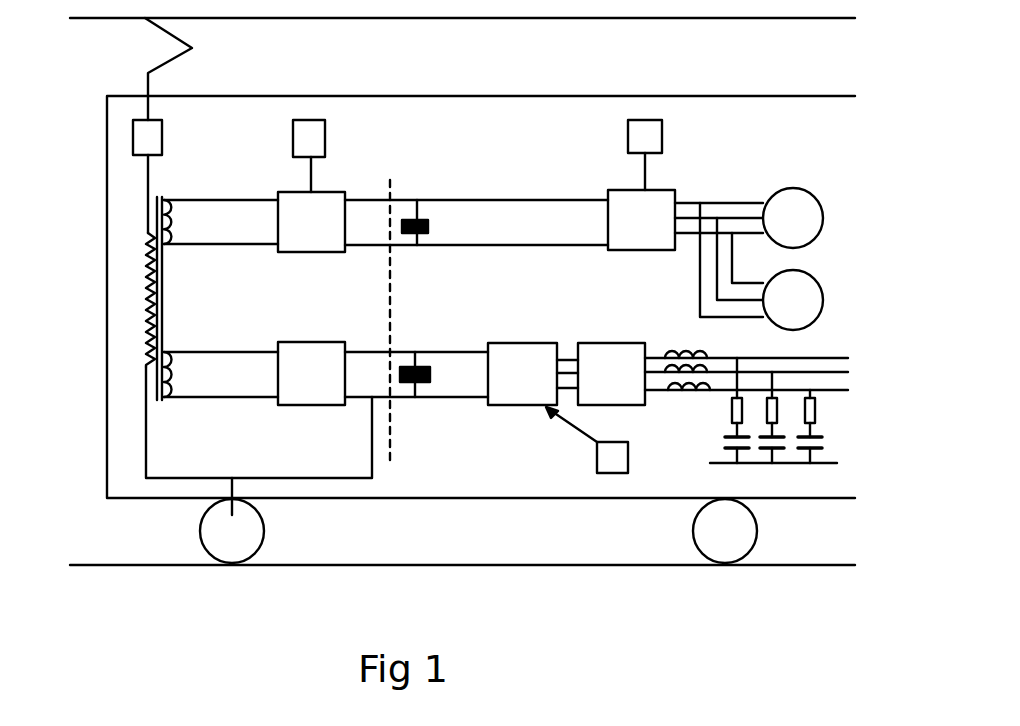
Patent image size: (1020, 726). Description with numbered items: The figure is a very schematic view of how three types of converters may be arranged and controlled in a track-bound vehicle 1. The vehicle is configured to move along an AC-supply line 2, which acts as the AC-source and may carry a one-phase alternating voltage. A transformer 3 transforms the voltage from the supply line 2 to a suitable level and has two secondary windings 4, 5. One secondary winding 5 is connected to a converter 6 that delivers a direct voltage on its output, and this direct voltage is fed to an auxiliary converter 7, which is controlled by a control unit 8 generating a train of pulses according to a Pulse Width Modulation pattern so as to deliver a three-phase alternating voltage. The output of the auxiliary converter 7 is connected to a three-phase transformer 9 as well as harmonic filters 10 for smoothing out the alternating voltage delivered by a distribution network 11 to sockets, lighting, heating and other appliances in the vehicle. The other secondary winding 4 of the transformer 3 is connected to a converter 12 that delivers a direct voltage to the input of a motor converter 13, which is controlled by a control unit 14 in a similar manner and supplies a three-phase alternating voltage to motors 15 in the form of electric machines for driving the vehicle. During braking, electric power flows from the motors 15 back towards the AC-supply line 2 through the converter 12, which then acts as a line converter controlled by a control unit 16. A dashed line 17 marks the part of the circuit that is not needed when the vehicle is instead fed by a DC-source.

The track-bound vehicle 1 is at (446, 95).
The AC-supply line 2 is at (313, 20).
The transformer 3 is at (140, 302).
The secondary winding 4 is at (180, 213).
The secondary winding 5 is at (178, 372).
The converter 6 is at (305, 407).
The auxiliary converter 7 is at (513, 407).
The control unit 8 is at (595, 462).
The three-phase transformer 9 is at (600, 343).
The harmonic filters 10 is at (712, 405).
The distribution network 11 is at (808, 358).
The converter 12 is at (333, 195).
The motor converter 13 is at (668, 186).
The control unit 14 is at (664, 128).
The motors 15 is at (793, 188).
The control unit 16 is at (332, 130).
The dashed line 17 is at (394, 196).